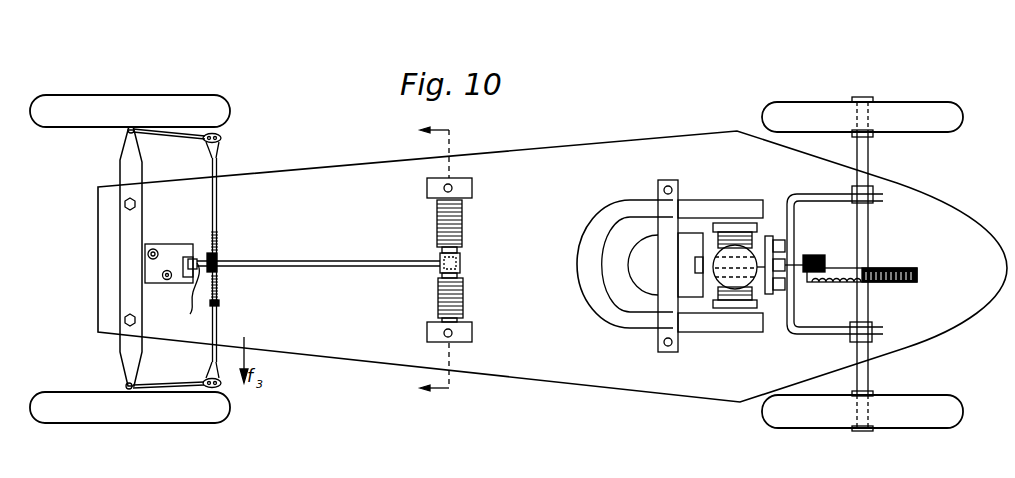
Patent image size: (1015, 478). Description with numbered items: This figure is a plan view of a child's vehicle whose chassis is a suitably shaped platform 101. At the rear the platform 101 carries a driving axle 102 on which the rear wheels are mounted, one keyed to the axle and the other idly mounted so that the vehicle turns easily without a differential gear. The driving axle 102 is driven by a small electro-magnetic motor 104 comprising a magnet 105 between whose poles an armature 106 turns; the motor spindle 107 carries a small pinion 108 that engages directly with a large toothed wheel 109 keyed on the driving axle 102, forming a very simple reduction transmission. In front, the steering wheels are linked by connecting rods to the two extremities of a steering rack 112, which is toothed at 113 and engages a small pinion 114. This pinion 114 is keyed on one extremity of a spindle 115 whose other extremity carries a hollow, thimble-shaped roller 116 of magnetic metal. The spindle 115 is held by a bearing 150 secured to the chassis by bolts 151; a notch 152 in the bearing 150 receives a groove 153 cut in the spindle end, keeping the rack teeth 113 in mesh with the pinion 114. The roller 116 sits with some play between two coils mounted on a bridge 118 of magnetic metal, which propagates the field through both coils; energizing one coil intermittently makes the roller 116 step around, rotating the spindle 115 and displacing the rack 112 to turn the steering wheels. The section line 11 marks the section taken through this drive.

The platform 101 is at (302, 182).
The driving axle 102 is at (868, 228).
The electro-magnetic motor 104 is at (745, 178).
The magnet 105 is at (628, 203).
The armature 106 is at (768, 236).
The spindle 107 is at (782, 247).
The pinion 108 is at (815, 255).
The toothed wheel 109 is at (898, 268).
The steering rack 112 is at (217, 190).
The toothed portion 113 is at (217, 242).
The pinion 114 is at (217, 267).
The spindle 115 is at (293, 266).
The roller 116 is at (462, 265).
The bridge 118 is at (460, 330).
The bearing 150 is at (168, 250).
The bolts 151 is at (165, 281).
The notch 152 is at (189, 298).
The groove 153 is at (216, 304).
The section line 11- 11 is at (447, 265).